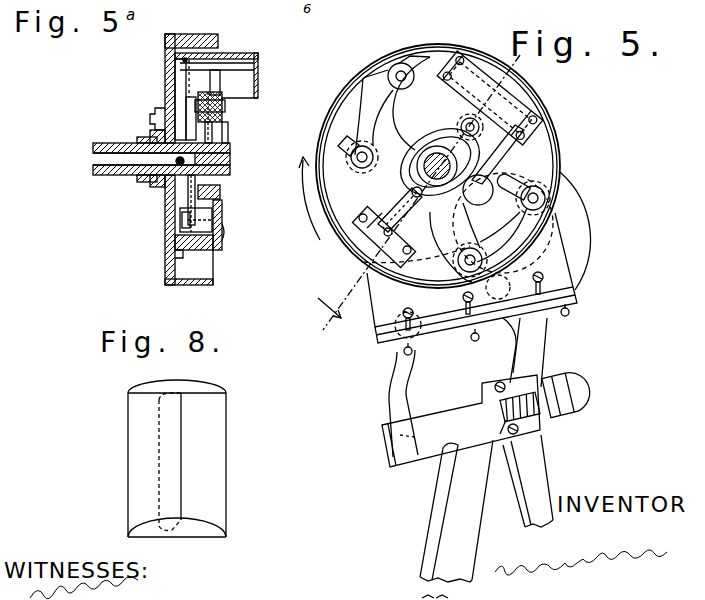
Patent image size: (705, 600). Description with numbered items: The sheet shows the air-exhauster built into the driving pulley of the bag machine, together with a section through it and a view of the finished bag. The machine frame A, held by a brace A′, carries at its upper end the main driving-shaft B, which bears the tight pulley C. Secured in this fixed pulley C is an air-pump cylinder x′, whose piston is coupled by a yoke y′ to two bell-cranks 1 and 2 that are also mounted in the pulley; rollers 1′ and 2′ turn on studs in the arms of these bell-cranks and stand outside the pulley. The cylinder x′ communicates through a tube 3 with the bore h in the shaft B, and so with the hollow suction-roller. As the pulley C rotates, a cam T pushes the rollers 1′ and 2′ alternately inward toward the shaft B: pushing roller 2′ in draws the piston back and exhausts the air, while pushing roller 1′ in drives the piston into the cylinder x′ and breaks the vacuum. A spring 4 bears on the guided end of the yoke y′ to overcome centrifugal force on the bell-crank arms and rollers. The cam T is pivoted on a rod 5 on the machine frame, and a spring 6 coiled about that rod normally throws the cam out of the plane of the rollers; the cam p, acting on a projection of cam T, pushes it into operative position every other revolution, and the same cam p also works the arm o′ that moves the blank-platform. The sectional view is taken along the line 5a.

In FIG. 5A, the tight pulley C is at (186, 34).
In FIG. 5, the tight pulley C is at (553, 132).
In FIG. 5A, the air-pump cylinder x′ is at (257, 76).
In FIG. 5, the air-pump cylinder x′ is at (490, 98).
In FIG. 5A, the tube 3 is at (175, 60).
In FIG. 5, the tube 3 is at (493, 165).
In FIG. 5A, the bell-crank 1 is at (210, 117).
In FIG. 5, the bell-crank 1 is at (408, 108).
In FIG. 5A, the yoke y′ is at (236, 128).
In FIG. 5, the yoke y′ is at (424, 150).
In FIG. 5A, the roller 2′ is at (155, 120).
In FIG. 5, the roller 2′ is at (528, 190).
In FIG. 5A, the bore h is at (96, 155).
In FIG. 5A, the main driving-shaft B is at (104, 172).
In FIG. 5, the main driving-shaft B is at (424, 166).
In FIG. 5A, the bell-crank 2 is at (188, 195).
In FIG. 5, the bell-crank 2 is at (458, 227).
In FIG. 5A, the spring 4 is at (222, 240).
In FIG. 5, the spring 4 is at (387, 227).
In FIG. 5, the roller 1′ is at (351, 157).
In FIG. 5, the section line 5a 5a is at (430, 199).
In FIG. 5, the cam p is at (563, 229).
In FIG. 5, the cam T is at (472, 284).
In FIG. 5, the arm o′ is at (458, 322).
In FIG. 5, the rod 5 is at (486, 420).
In FIG. 5, the spring 6 is at (517, 407).
In FIG. 5, the frame A is at (536, 481).
In FIG. 5, the brace A′ is at (456, 511).